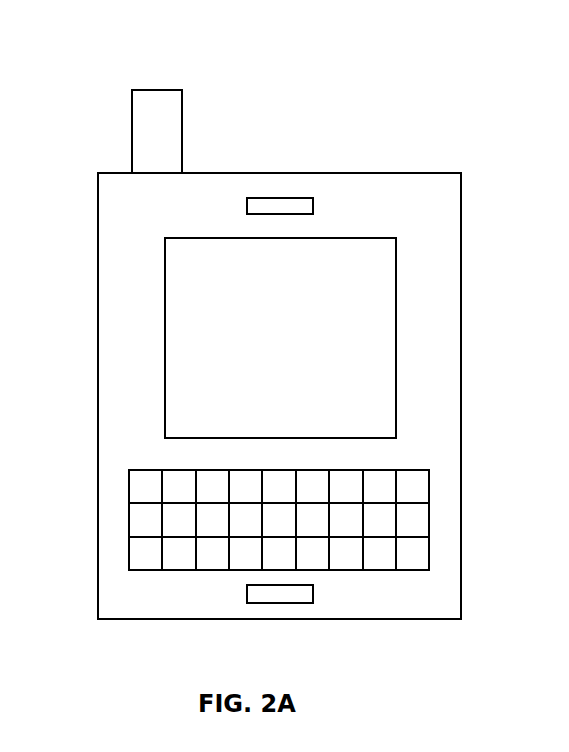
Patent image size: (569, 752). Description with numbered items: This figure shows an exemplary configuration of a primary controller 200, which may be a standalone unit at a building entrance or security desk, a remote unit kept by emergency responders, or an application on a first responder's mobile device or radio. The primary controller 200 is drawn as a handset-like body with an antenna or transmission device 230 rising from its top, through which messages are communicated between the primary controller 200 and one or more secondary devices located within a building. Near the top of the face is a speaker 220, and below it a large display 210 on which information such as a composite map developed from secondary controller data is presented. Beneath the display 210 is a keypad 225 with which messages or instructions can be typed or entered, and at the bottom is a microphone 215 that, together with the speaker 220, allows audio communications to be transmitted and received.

The primary controller 200 is at (94, 104).
The antenna or transmission device 230 is at (183, 127).
The speaker 220 is at (276, 198).
The display 210 is at (397, 320).
The keypad 225 is at (429, 519).
The microphone 215 is at (312, 603).